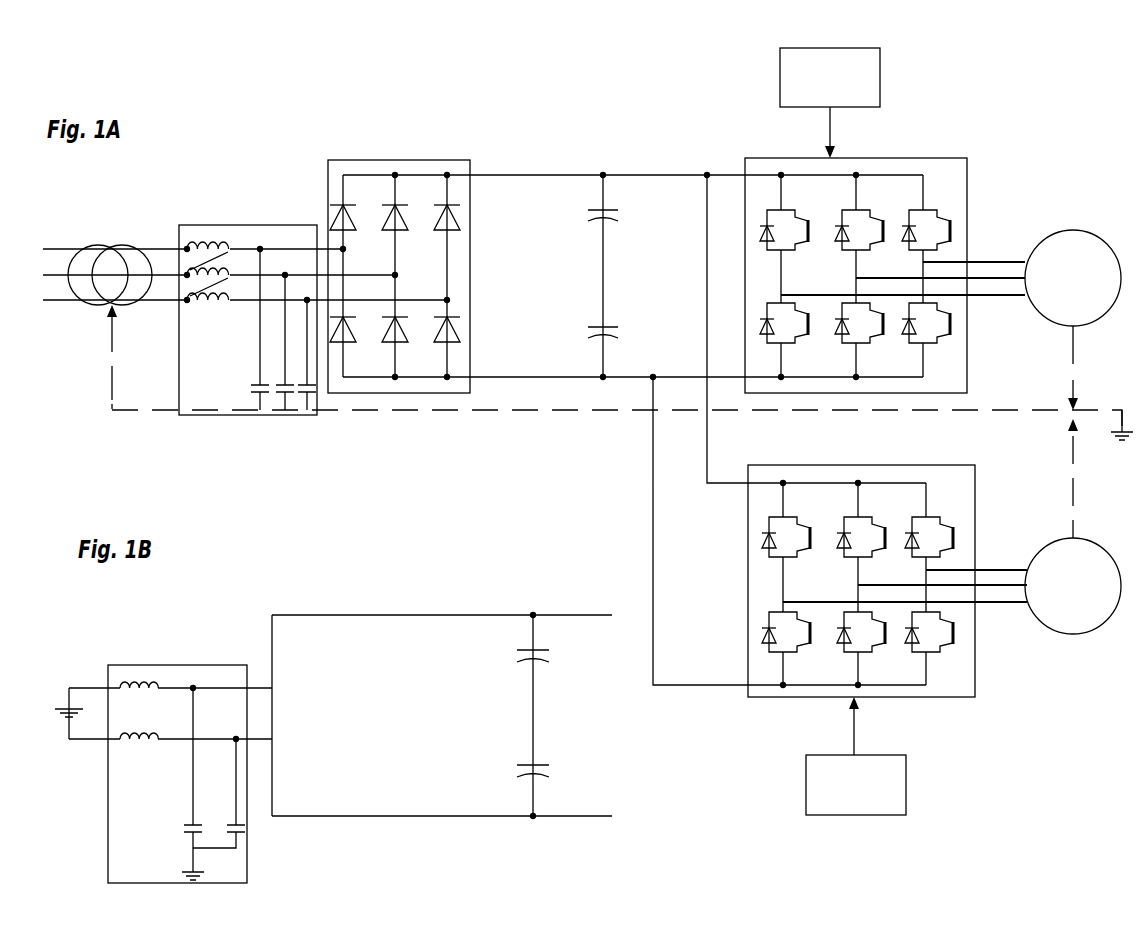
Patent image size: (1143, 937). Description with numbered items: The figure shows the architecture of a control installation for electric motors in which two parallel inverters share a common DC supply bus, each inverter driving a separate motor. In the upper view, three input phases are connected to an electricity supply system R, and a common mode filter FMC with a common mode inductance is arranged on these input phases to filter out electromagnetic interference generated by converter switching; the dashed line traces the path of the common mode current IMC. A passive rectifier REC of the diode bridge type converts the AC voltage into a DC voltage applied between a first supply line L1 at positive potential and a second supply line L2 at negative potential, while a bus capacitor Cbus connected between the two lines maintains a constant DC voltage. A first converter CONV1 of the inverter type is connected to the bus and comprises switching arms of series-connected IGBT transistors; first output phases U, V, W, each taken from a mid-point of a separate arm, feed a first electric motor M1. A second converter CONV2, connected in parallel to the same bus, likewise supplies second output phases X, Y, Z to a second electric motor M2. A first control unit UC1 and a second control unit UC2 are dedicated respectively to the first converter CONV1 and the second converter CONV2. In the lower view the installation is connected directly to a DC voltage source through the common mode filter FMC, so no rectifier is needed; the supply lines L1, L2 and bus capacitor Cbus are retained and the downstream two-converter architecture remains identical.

In FIG. 1A, the electricity supply system R is at (100, 248).
In FIG. 1A, the common mode filter FMC is at (250, 224).
In FIG. 1B, the common mode filter FMC is at (180, 665).
In FIG. 1A, the common mode current IMC is at (127, 357).
In FIG. 1A, the passive rectifier REC is at (352, 160).
In FIG. 1A, the first supply line L1 is at (562, 175).
In FIG. 1B, the first supply line L1 is at (492, 615).
In FIG. 1A, the second supply line L2 is at (532, 378).
In FIG. 1B, the second supply line L2 is at (460, 817).
In FIG. 1A, the bus capacitor Cbus is at (593, 238).
In FIG. 1B, the bus capacitor Cbus is at (522, 680).
In FIG. 1A, the first control unit UC1 is at (830, 103).
In FIG. 1A, the first converter CONV1 is at (936, 158).
In FIG. 1A, the first output phase U is at (985, 262).
In FIG. 1A, the first output phase V is at (1007, 278).
In FIG. 1A, the first output phase W is at (998, 297).
In FIG. 1A, the first electric motor M1 is at (1073, 278).
In FIG. 1A, the second converter CONV2 is at (946, 465).
In FIG. 1A, the second output phase X is at (990, 570).
In FIG. 1A, the second output phase Y is at (1020, 585).
In FIG. 1A, the second output phase Z is at (1000, 604).
In FIG. 1A, the second electric motor M2 is at (1073, 586).
In FIG. 1A, the second control unit UC2 is at (856, 756).